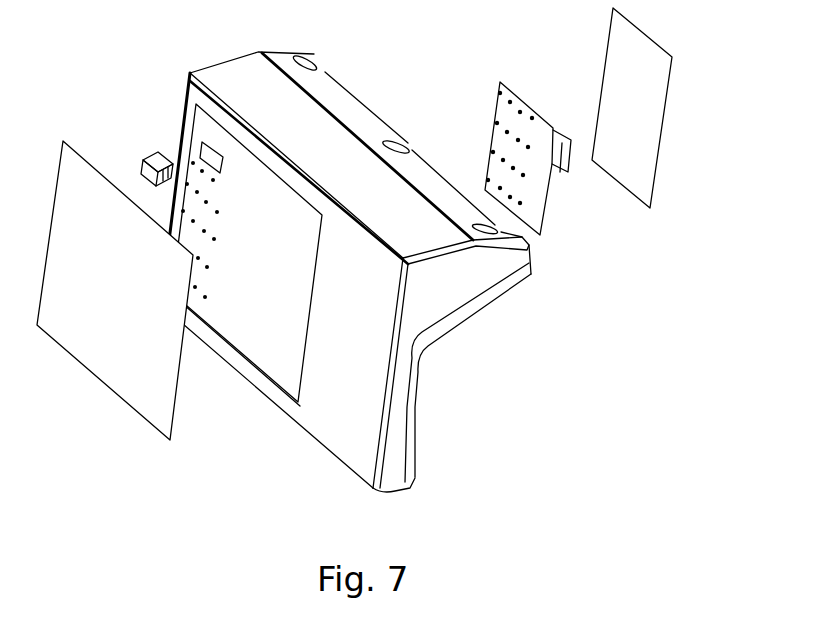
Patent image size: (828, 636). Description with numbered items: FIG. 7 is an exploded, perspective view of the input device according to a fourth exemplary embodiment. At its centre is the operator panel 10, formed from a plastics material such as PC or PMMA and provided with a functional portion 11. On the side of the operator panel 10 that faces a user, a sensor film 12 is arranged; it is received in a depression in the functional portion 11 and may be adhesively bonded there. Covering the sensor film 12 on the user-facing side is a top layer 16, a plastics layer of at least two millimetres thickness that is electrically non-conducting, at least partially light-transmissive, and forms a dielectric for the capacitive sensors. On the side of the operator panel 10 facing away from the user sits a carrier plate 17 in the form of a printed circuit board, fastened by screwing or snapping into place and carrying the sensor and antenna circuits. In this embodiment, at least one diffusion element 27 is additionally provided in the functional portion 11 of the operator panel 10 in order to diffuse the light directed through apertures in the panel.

The operator panel 10 is at (398, 403).
The functional portion 11 is at (283, 365).
The sensor film 12 is at (535, 205).
The top layer 16 is at (158, 417).
The carrier plate 17 is at (650, 112).
The diffusion element 27 is at (141, 157).